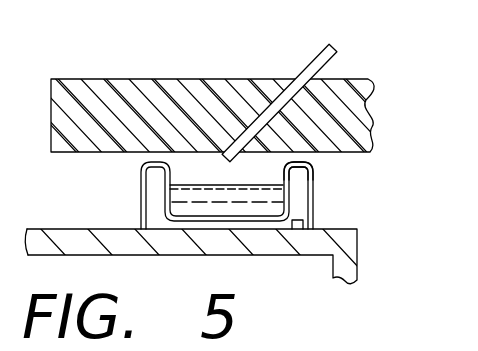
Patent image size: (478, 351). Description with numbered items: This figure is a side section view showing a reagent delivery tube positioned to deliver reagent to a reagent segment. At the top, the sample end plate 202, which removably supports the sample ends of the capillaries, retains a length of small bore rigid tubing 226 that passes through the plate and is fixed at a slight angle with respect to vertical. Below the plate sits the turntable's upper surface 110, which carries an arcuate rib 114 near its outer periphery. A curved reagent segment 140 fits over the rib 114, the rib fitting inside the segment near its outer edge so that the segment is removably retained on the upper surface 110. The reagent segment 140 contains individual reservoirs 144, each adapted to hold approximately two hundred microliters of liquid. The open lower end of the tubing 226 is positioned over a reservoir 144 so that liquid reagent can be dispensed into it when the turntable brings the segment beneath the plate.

The sample end plate 202 is at (366, 79).
The small bore rigid tubing length 226 is at (307, 63).
The upper surface 110 is at (104, 229).
The arcuate rib 114 is at (297, 220).
The reagent segment 140 is at (311, 200).
The reservoir 144 is at (273, 163).